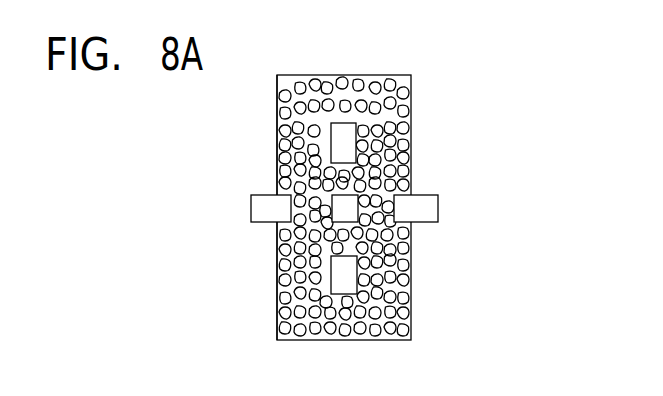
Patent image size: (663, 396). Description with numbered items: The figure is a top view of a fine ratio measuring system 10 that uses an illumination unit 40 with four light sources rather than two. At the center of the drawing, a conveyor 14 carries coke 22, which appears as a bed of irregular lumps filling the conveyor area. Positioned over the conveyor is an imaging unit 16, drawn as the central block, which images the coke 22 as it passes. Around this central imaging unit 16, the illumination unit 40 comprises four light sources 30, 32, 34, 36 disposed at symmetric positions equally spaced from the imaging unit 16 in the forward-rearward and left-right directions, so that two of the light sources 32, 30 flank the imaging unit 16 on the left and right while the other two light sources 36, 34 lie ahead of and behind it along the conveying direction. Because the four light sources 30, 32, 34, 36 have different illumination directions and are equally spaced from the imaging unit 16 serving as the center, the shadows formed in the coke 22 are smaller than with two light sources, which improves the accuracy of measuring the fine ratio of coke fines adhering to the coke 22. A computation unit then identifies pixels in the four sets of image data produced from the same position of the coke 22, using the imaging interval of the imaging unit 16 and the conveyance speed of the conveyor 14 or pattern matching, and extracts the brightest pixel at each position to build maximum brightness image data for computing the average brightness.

The fine ratio measuring system 10 is at (532, 55).
The conveyor 14 is at (345, 75).
The imaging unit 16 is at (282, 254).
The coke 22 is at (402, 332).
The light source 30 is at (438, 207).
The light source 32 is at (260, 195).
The light source 34 is at (410, 262).
The light source 36 is at (358, 123).
The illumination unit 40 is at (500, 57).